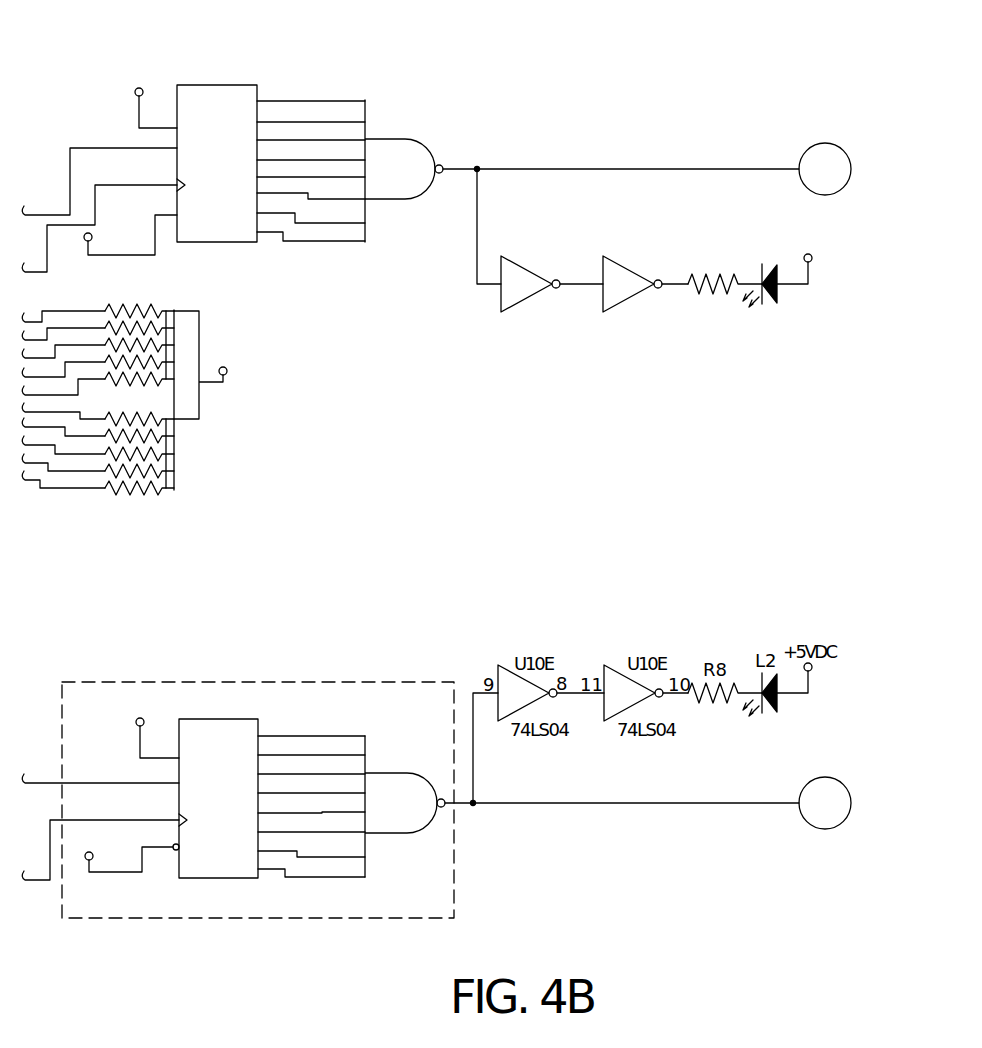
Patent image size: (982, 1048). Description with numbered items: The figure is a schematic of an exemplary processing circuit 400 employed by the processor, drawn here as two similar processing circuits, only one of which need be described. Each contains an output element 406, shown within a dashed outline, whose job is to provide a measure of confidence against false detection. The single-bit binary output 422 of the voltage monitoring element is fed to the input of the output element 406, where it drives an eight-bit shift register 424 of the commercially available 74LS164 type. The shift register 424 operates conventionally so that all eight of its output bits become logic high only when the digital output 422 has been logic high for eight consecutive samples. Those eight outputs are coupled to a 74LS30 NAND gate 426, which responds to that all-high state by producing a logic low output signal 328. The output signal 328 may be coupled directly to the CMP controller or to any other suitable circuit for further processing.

The circuit 400 is at (522, 29).
The output element 406 is at (208, 681).
The output 422 is at (50, 782).
The shift register 424 is at (178, 879).
The NAND gate 426 is at (430, 820).
The output signal 328 is at (637, 804).